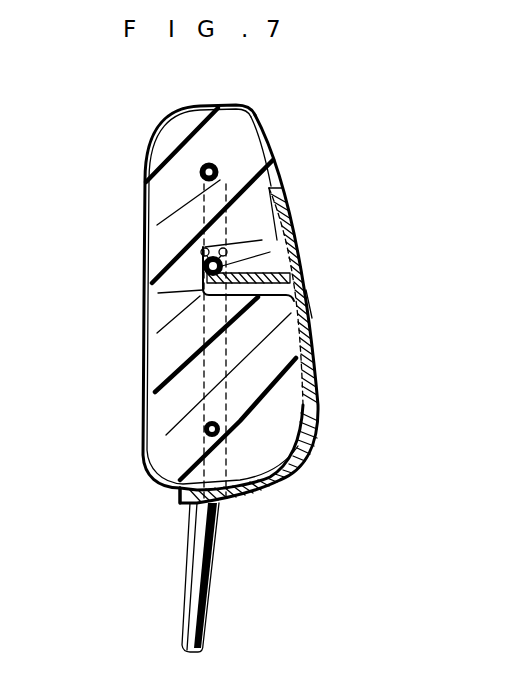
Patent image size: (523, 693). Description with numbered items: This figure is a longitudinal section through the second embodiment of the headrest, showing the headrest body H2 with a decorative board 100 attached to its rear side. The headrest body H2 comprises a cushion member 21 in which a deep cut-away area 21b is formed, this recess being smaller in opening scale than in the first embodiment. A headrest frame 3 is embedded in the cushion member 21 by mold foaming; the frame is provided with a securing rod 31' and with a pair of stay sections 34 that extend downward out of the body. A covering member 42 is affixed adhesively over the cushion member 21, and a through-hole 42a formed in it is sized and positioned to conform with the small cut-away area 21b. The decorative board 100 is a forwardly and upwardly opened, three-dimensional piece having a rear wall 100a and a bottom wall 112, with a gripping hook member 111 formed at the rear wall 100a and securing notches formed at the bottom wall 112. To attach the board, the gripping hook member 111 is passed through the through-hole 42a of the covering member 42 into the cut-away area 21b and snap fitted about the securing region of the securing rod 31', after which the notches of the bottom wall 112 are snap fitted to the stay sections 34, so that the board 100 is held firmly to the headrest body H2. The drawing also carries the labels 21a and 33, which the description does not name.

The headrest frame 3 is at (221, 168).
The cushion member 21 is at (158, 257).
The upright portion of spring plate 21a is at (292, 197).
The cut-away area 21b is at (262, 240).
The securing rod 31' is at (293, 246).
The covering member 42 is at (155, 381).
The through-hole 42a is at (312, 298).
The decorative board 100 is at (317, 388).
The rear wall 100a is at (317, 352).
The headrest body H2 is at (141, 192).
The gripping hook member 111 is at (158, 293).
The screw 33 is at (205, 428).
The bottom wall 112 is at (185, 505).
The stay sections 34 is at (210, 585).